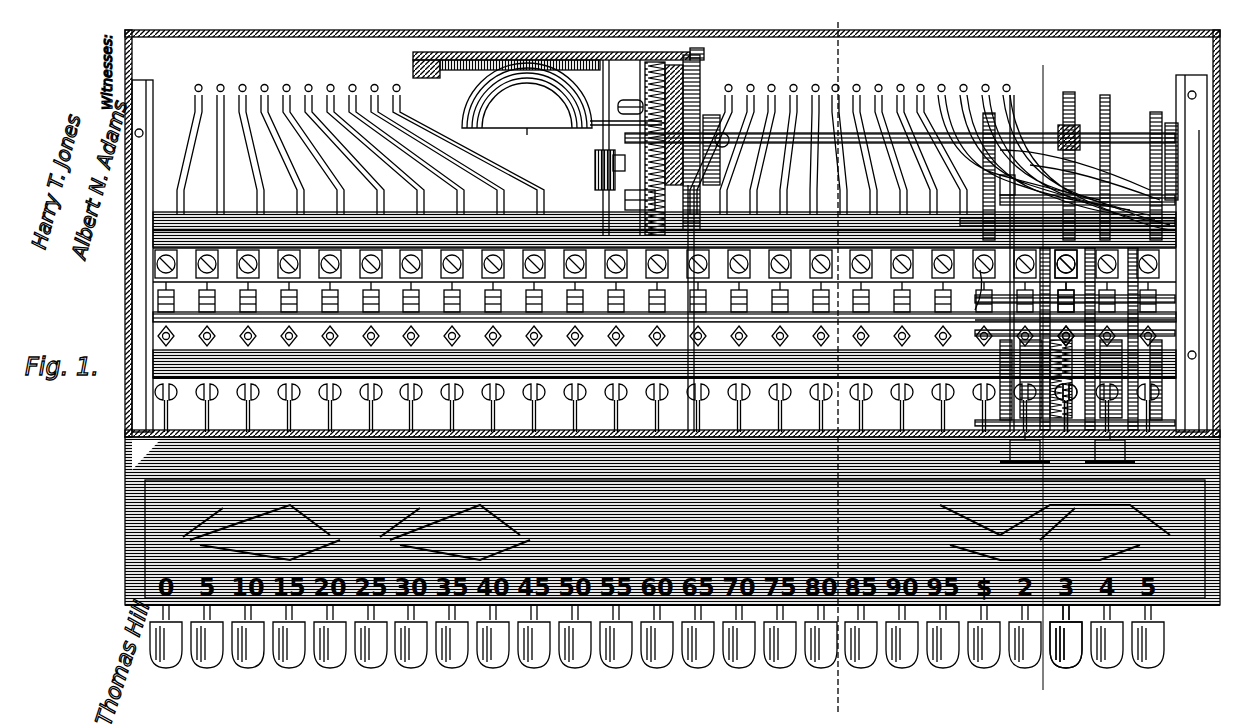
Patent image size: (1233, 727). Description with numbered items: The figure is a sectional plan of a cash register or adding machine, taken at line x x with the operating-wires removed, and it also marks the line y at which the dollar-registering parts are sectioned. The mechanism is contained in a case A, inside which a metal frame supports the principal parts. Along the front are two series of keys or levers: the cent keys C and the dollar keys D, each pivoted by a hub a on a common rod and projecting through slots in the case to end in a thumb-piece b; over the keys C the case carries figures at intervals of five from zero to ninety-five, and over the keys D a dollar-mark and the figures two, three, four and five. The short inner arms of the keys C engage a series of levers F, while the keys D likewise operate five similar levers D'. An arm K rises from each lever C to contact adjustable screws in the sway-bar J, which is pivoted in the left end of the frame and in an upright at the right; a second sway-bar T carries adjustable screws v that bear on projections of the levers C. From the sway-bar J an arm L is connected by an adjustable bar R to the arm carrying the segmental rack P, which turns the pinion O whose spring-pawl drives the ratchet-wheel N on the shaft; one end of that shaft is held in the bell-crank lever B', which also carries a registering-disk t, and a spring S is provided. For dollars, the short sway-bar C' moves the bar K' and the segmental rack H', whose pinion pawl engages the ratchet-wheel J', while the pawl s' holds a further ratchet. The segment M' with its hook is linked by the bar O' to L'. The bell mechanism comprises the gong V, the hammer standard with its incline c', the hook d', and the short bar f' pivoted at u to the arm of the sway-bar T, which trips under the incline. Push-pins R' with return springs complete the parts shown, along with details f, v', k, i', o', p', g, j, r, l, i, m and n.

The case A is at (132, 258).
The segment M' is at (1172, 253).
The sway-bar T is at (262, 240).
The levers F is at (390, 90).
The levers D' is at (1056, 136).
The segmental rack P is at (692, 52).
The gong V is at (527, 130).
The hub a is at (632, 97).
The incline c' is at (613, 155).
The hook d' is at (612, 151).
The short metal bar f' is at (588, 147).
The sway-bar J is at (633, 147).
The ratchet-wheel N is at (712, 160).
The pinion O is at (708, 273).
The shaft n is at (818, 143).
The rack S' is at (1070, 152).
The segmental rack H' is at (1012, 259).
The bell-crank lever B' is at (1067, 167).
The frame bar m is at (1130, 195).
The bar R is at (1025, 447).
The push-pins R' is at (1110, 447).
The ratchet-wheel J' is at (1008, 183).
The rod f is at (1075, 316).
The arms K is at (496, 459).
The adjustable screws v is at (392, 459).
The screw v' is at (656, 459).
The spring S is at (566, 459).
The block k is at (821, 459).
The bar K' is at (940, 459).
The pawl s' is at (849, 433).
The link i' is at (886, 414).
The keys or levers C is at (595, 469).
The arm L is at (880, 459).
The thumb-piece b is at (659, 459).
The keys or levers D is at (1080, 465).
The pivot u is at (1188, 185).
The registering-disk t is at (1207, 300).
The pin o' is at (1186, 230).
The pin p' is at (1189, 247).
The short sway-bar C' is at (1188, 270).
The bar O' is at (1189, 291).
The bar L' is at (1181, 313).
The pawl g is at (1054, 181).
The pawl j is at (1041, 193).
The pin r is at (1049, 163).
The link l is at (1105, 165).
The link i is at (1124, 185).
The section line x is at (837, 366).
The section line y is at (1012, 700).